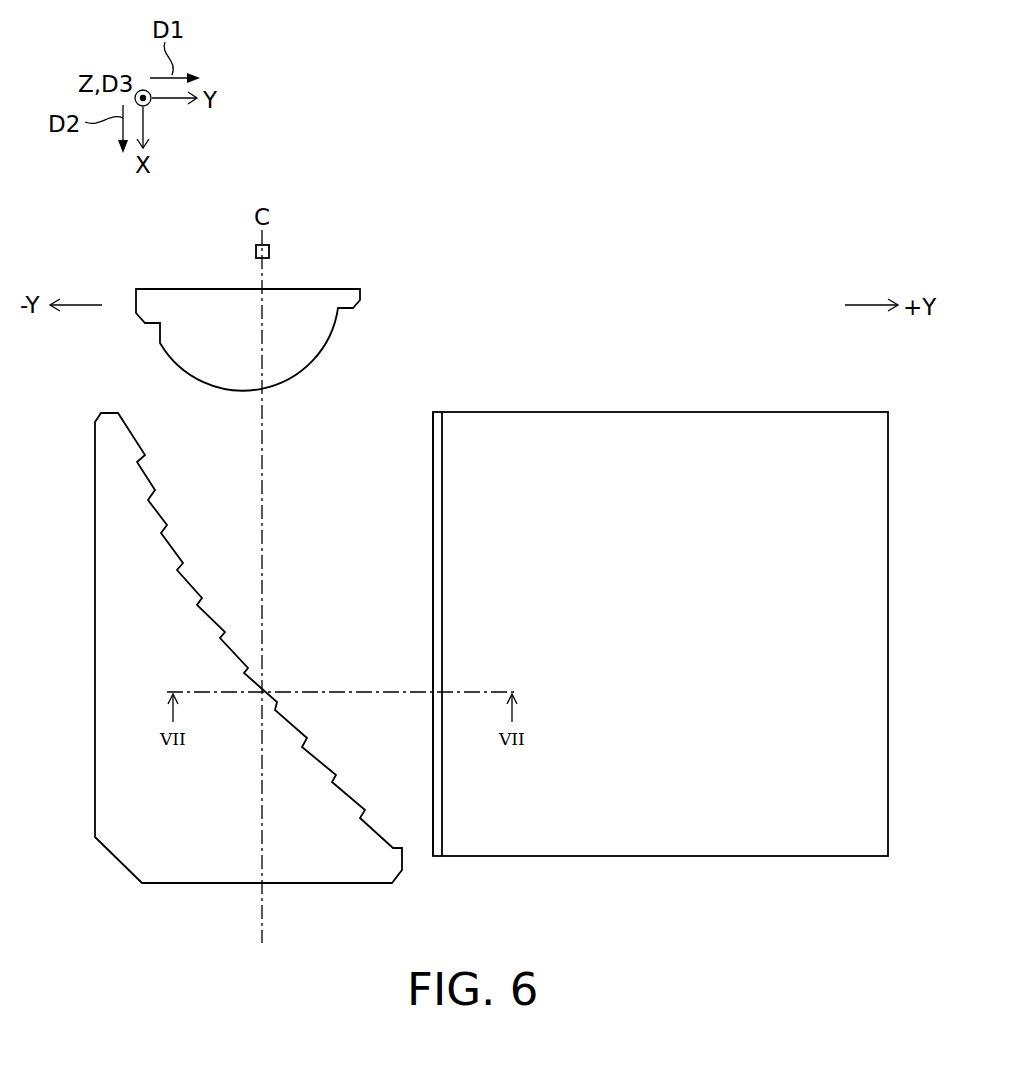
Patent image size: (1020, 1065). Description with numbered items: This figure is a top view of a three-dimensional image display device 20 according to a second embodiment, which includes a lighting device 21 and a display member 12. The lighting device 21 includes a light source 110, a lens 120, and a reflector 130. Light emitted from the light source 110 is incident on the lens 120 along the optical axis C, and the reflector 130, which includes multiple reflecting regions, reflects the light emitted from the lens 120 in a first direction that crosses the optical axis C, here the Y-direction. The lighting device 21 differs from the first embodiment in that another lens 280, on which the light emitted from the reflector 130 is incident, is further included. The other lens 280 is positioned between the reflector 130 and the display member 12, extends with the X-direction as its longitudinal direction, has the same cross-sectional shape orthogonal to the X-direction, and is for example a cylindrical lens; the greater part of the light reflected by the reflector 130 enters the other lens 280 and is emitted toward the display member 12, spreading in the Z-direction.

The display member 12 is at (812, 430).
The three-dimensional image display device 20 is at (193, 240).
The lighting device 21 is at (128, 278).
The light source 110 is at (270, 251).
The lens 120 is at (302, 345).
The reflector 130 is at (132, 858).
The other lens 280 is at (438, 858).